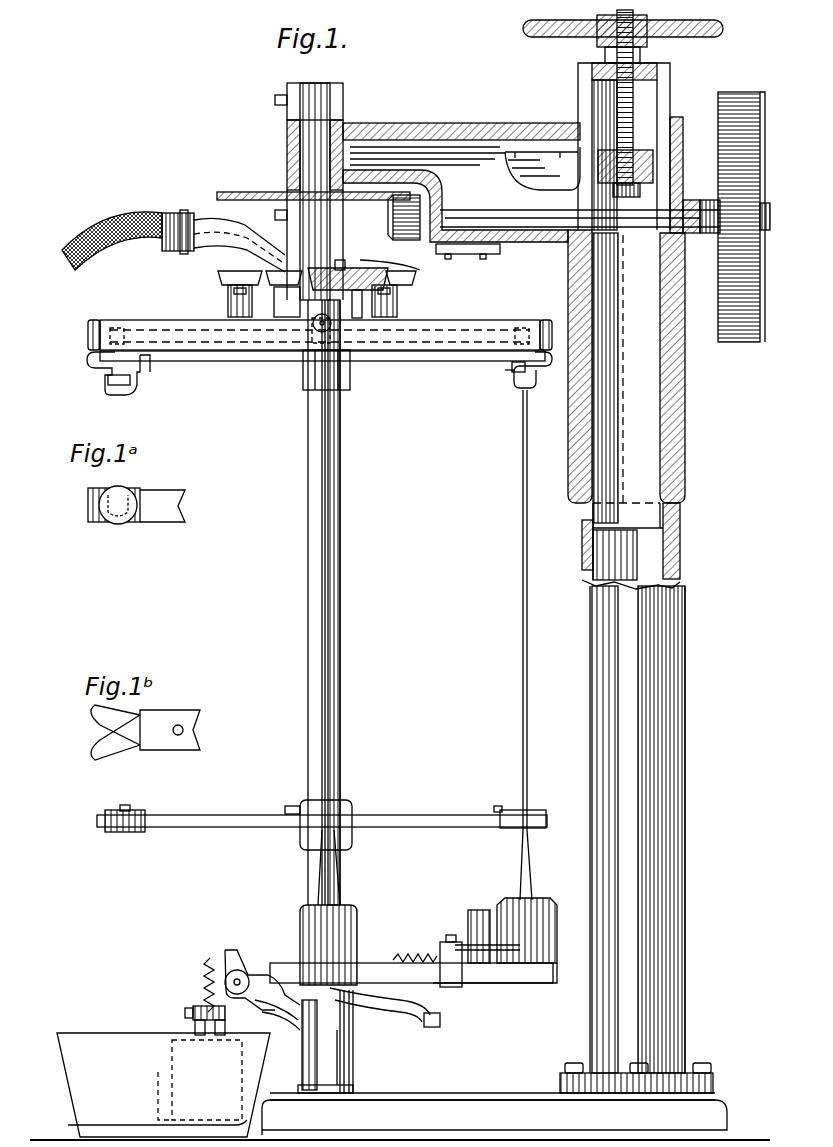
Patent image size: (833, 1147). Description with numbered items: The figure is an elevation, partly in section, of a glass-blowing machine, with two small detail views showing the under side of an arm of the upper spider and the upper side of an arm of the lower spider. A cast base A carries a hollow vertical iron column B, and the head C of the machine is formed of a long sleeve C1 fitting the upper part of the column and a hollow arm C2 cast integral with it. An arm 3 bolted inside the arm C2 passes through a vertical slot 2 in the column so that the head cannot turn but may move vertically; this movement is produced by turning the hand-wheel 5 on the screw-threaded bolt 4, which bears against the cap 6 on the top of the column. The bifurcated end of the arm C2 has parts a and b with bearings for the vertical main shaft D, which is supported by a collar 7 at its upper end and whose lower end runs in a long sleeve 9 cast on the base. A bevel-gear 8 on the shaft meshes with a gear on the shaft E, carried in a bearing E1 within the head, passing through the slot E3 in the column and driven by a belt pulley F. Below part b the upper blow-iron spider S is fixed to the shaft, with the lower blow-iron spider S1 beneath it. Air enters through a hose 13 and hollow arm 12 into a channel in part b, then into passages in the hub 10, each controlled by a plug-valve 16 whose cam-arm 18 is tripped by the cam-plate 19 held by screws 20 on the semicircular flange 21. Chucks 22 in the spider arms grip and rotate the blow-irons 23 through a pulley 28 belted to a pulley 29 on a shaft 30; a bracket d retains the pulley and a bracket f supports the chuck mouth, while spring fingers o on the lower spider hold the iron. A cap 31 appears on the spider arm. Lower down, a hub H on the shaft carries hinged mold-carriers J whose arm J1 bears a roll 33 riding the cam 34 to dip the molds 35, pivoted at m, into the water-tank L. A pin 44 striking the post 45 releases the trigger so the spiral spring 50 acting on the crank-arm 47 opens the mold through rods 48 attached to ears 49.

In FIG. 1, the vertical slot 2 is at (578, 80).
In FIG. 1, the arm 3 is at (550, 160).
In FIG. 1, the screw-threaded bolt 4 is at (634, 90).
In FIG. 1, the hand-wheel 5 is at (633, 31).
In FIG. 1, the cap 6 is at (597, 45).
In FIG. 1, the collar 7 is at (300, 113).
In FIG. 1, the bevel-gear 8 is at (262, 192).
In FIG. 1, the long sleeve 9 is at (354, 1047).
In FIG. 1, the hub 10 is at (338, 360).
In FIG. 1, the hollow arm or conduit 12 is at (192, 215).
In FIG. 1, the hose 13 is at (118, 228).
In FIG. 1, the plug-valve 16 is at (298, 360).
In FIG. 1, the cam-arm 18 is at (228, 300).
In FIG. 1, the cam-plate 19 is at (412, 304).
In FIG. 1, the screws 20 is at (352, 270).
In FIG. 1, the semicircular flange 21 is at (398, 275).
In FIG. 1, the chuck 22 is at (108, 380).
In FIG. 1, the blow-iron 23 is at (335, 425).
In FIG. 1, the pulley 28 is at (92, 355).
In FIG. 1, the pulley 29 is at (222, 362).
In FIG. 1, the shaft 30 is at (274, 302).
In FIG. 1, the cap 31 is at (218, 278).
In FIG. 1, the bearing-roll 33 is at (441, 1020).
In FIG. 1, the cam 34 is at (314, 1046).
In FIG. 1, the mold 35 is at (300, 918).
In FIG. 1, the pin 44 is at (385, 1010).
In FIG. 1, the post 45 is at (354, 1078).
In FIG. 1, the crank-arm 47 is at (193, 1012).
In FIG. 1, the rods 48 is at (195, 1030).
In FIG. 1, the ears 49 is at (520, 948).
In FIG. 1, the spiral spring 50 is at (207, 968).
In FIG. 1, the base A is at (400, 1116).
In FIG. 1, the hollow vertical iron column B is at (665, 550).
In FIG. 1, the head C is at (508, 203).
In FIG. 1, the long sleeve C1 is at (688, 432).
In FIG. 1, the hollow arm C2 is at (430, 124).
In FIG. 1, the main shaft D is at (300, 82).
In FIG. 1, the shaft E is at (613, 238).
In FIG. 1, the bearing E1 is at (425, 206).
In FIG. 1, the slot E3 is at (665, 153).
In FIG. 1, the pulley F is at (760, 165).
In FIG. 1, the hub H is at (358, 1004).
In FIG. 1, the mold-carrier J is at (224, 950).
In FIG. 1, the downwardly-projecting arm J1 is at (318, 1025).
In FIG. 1, the water-tank L is at (163, 1085).
In FIG. 1, the upper blow-iron spider S is at (124, 322).
In FIG. 1, the lower blow-iron spider S1 is at (228, 826).
In FIG. 1, the upper part of bifurcated end a is at (287, 150).
In FIG. 1, the lower part of bifurcated end b is at (283, 262).
In FIG. 1, the bracket d is at (88, 328).
In FIG. 1A, the bracket d is at (88, 500).
In FIG. 1, the bracket f is at (157, 355).
In FIG. 1A, the bracket f is at (185, 497).
In FIG. 1, the pivot m is at (480, 910).
In FIG. 1B, the spring-actuated finger o is at (95, 718).